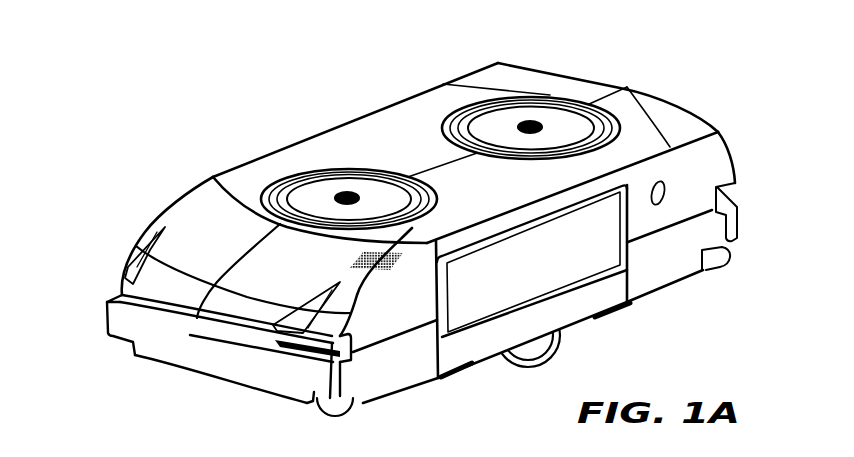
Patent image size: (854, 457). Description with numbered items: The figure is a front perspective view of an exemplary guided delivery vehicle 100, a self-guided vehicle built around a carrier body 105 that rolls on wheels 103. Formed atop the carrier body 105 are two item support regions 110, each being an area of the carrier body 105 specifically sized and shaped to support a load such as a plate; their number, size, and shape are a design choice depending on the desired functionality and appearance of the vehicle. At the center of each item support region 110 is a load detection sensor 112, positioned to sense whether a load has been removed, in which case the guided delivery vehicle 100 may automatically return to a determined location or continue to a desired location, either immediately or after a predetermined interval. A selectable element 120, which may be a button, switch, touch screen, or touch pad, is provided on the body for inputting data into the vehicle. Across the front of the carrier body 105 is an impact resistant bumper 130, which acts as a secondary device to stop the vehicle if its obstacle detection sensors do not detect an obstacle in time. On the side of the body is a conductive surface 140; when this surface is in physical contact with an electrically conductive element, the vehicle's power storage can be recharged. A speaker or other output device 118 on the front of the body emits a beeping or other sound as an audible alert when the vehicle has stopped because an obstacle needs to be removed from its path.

The guided delivery vehicle 100 is at (182, 110).
The wheels 103 is at (544, 356).
The carrier body 105 is at (200, 220).
The item support region 110 is at (348, 187).
The load detection sensor 112 is at (340, 196).
The speaker or other output device 118 is at (395, 266).
The selectable element 120 is at (667, 188).
The bumper 130 is at (119, 320).
The conductive surface 140 is at (585, 263).